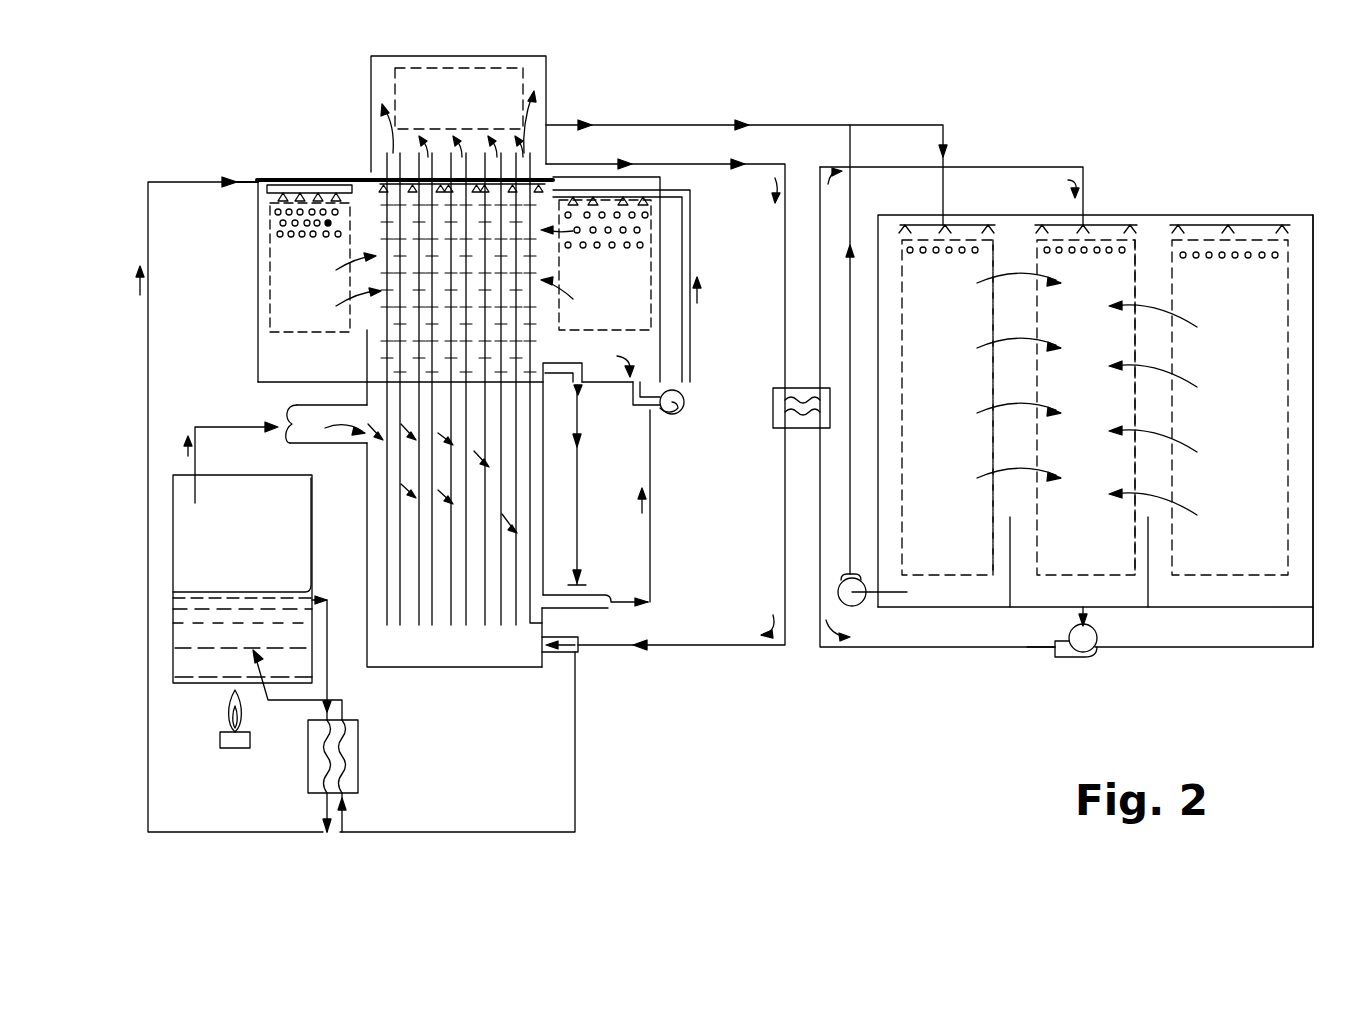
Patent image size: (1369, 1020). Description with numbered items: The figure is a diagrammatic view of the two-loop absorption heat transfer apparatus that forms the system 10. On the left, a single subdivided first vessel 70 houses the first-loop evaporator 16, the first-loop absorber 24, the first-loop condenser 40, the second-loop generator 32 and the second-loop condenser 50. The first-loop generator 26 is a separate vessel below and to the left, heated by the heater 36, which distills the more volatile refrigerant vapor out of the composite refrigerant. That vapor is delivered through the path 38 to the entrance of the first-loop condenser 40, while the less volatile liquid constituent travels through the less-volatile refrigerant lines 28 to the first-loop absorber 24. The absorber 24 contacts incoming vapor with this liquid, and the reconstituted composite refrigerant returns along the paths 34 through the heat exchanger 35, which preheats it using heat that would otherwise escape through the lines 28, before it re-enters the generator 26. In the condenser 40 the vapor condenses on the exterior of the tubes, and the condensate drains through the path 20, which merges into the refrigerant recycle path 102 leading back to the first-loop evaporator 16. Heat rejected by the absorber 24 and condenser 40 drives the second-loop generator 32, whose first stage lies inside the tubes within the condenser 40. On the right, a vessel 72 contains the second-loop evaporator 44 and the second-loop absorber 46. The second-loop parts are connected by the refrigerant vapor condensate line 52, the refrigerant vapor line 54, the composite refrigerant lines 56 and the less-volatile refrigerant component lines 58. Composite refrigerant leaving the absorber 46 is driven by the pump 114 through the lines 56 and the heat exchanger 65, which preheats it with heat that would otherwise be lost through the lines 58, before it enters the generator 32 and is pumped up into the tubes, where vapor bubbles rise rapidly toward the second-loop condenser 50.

The system 10 is at (1065, 138).
The first-loop evaporator 16 is at (651, 231).
The refrigerant path 20 is at (652, 576).
The first-loop absorber 24 is at (376, 222).
The first-loop generator 26 is at (267, 475).
The less-volatile refrigerant lines 28 is at (188, 180).
The second-loop generator 32 is at (393, 578).
The composite refrigerant paths 34 is at (580, 522).
The heat exchanger 35 is at (358, 758).
The heater 36 is at (220, 742).
The refrigerant vapor path 38 is at (222, 427).
The first-loop condenser 40 is at (537, 477).
The second-loop evaporator 44 is at (1288, 357).
The second-loop absorber 46 is at (1137, 268).
The second-loop condenser 50 is at (445, 68).
The refrigerant vapor condensate line 52 is at (942, 124).
The refrigerant vapor line 54 is at (1013, 270).
The composite refrigerant lines 56 is at (1027, 648).
The less-volatile refrigerant component lines 58 is at (868, 167).
The heat exchanger 65 is at (773, 402).
The first vessel 70 is at (367, 495).
The vessel 72 is at (1313, 495).
The refrigerant recycle path 102 is at (692, 345).
The pump 114 is at (1095, 655).